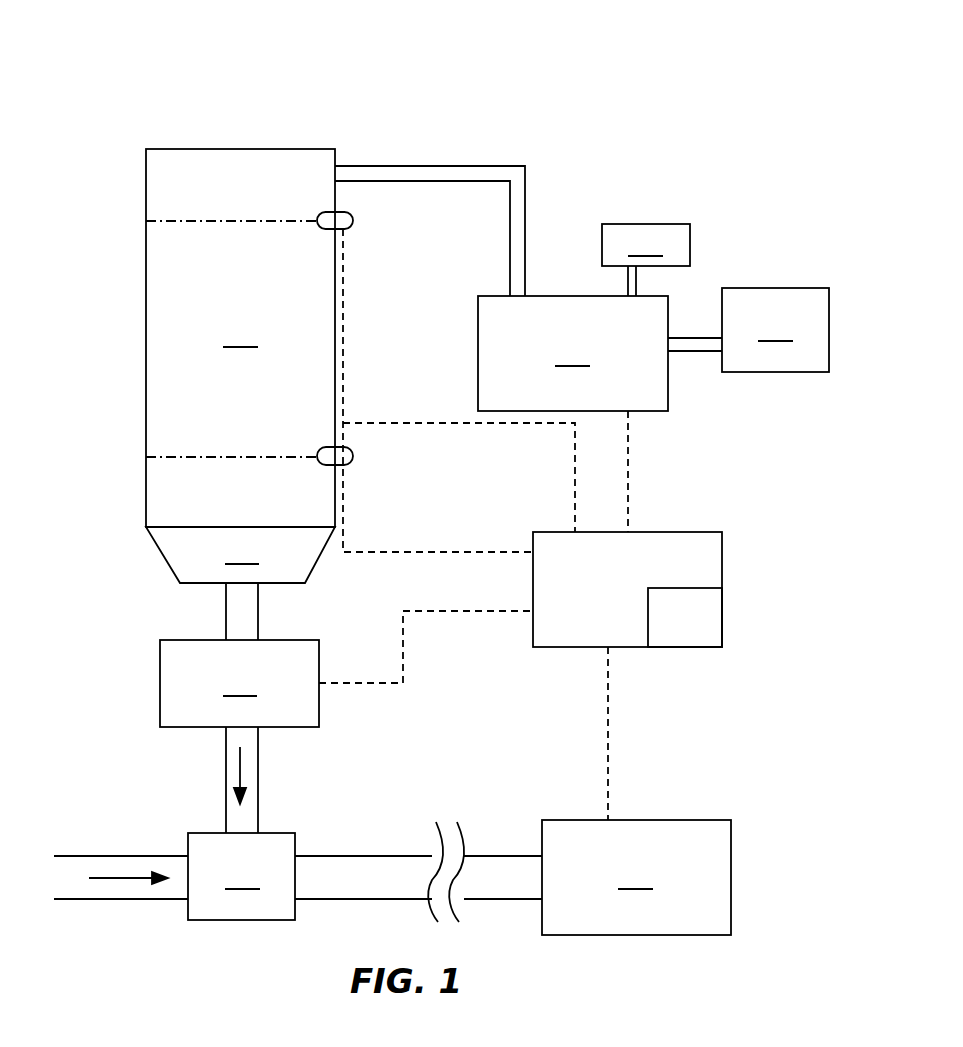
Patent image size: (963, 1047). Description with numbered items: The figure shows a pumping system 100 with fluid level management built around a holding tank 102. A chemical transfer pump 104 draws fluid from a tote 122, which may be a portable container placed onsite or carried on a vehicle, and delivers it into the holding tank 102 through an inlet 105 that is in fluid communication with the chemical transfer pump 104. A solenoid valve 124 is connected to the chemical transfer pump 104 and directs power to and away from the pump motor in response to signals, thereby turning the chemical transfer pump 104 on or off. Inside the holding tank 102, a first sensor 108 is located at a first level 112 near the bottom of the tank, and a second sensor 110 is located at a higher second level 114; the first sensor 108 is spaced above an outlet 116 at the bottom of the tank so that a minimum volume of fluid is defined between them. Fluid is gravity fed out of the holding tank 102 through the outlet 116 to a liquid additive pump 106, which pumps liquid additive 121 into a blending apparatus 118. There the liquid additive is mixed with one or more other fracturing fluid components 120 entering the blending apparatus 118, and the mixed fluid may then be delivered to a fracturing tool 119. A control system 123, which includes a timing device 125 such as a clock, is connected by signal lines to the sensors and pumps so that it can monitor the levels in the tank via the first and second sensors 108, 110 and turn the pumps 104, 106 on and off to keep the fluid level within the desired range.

The pumping system 100 is at (206, 98).
The holding tank 102 is at (240, 338).
The chemical transfer pump 104 is at (573, 353).
The inlet 105 is at (337, 150).
The liquid additive pump 106 is at (239, 683).
The first sensor 108 is at (353, 456).
The second sensor 110 is at (353, 221).
The first level 112 is at (146, 457).
The second level 114 is at (146, 221).
The outlet 116 is at (240, 555).
The blending apparatus 118 is at (241, 876).
The fracturing tool 119 is at (636, 877).
The fracturing fluid component 120 is at (125, 878).
The liquid additive 121 is at (240, 768).
The tote 122 is at (748, 330).
The control system 123 is at (722, 548).
The solenoid valve 124 is at (646, 260).
The timing device 125 is at (722, 613).